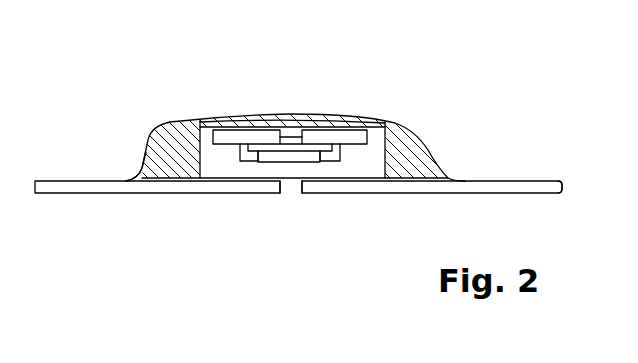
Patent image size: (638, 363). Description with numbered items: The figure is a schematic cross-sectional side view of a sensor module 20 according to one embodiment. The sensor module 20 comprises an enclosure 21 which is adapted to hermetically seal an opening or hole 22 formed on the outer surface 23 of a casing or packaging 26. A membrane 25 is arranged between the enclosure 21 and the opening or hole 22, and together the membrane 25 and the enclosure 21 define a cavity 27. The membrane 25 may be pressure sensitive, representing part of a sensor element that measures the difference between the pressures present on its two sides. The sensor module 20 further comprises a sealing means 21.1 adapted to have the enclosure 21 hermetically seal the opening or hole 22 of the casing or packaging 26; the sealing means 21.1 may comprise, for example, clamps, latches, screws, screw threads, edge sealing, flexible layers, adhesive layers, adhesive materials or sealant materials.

The sensor module 20 is at (124, 92).
The enclosure 21 is at (419, 133).
The sealing means 21.1 is at (136, 177).
The opening or hole 22 is at (289, 184).
The outer surface 23 is at (493, 180).
The membrane 25 is at (311, 156).
The casing or packaging 26 is at (563, 192).
The cavity 27 is at (265, 154).